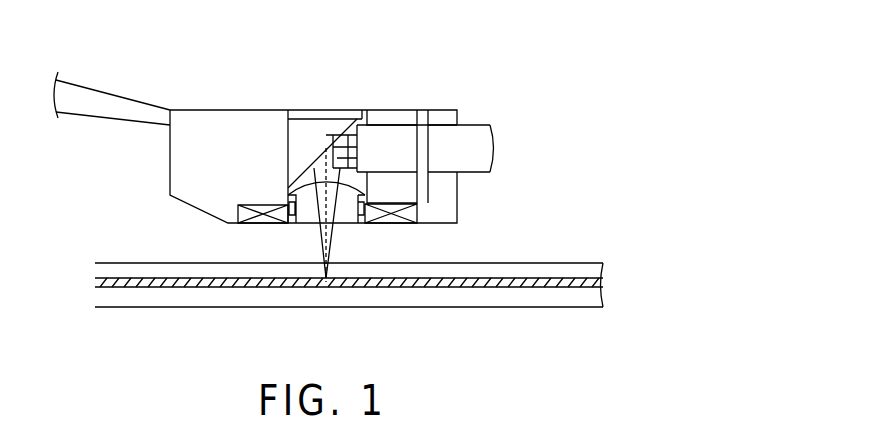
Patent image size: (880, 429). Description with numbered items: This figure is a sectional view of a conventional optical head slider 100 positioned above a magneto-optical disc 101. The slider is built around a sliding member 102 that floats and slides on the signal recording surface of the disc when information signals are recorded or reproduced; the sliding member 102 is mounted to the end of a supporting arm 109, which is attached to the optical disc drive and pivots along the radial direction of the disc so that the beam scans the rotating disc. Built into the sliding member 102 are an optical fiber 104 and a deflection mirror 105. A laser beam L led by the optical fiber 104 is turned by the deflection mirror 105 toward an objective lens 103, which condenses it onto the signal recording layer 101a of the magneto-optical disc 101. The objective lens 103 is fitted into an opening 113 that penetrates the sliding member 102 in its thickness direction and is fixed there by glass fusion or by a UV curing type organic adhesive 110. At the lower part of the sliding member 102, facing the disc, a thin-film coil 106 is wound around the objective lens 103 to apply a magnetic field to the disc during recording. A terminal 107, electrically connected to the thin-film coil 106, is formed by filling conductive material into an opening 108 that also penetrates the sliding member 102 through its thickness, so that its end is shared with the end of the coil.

The optical head slider 100 is at (236, 80).
The magneto-optical disc 101 is at (553, 297).
The signal recording layer 101a is at (525, 282).
The sliding member 102 is at (190, 198).
The objective lens 103 is at (305, 212).
The optical fiber 104 is at (480, 135).
The deflection mirror 105 is at (308, 124).
The thin-film coil 106 is at (397, 227).
The terminal 107 is at (433, 135).
The opening 108 is at (422, 110).
The supporting arm 109 is at (115, 106).
The UV curing type organic adhesive 110 is at (363, 213).
The opening 113 is at (358, 114).
The laser beam L is at (335, 242).